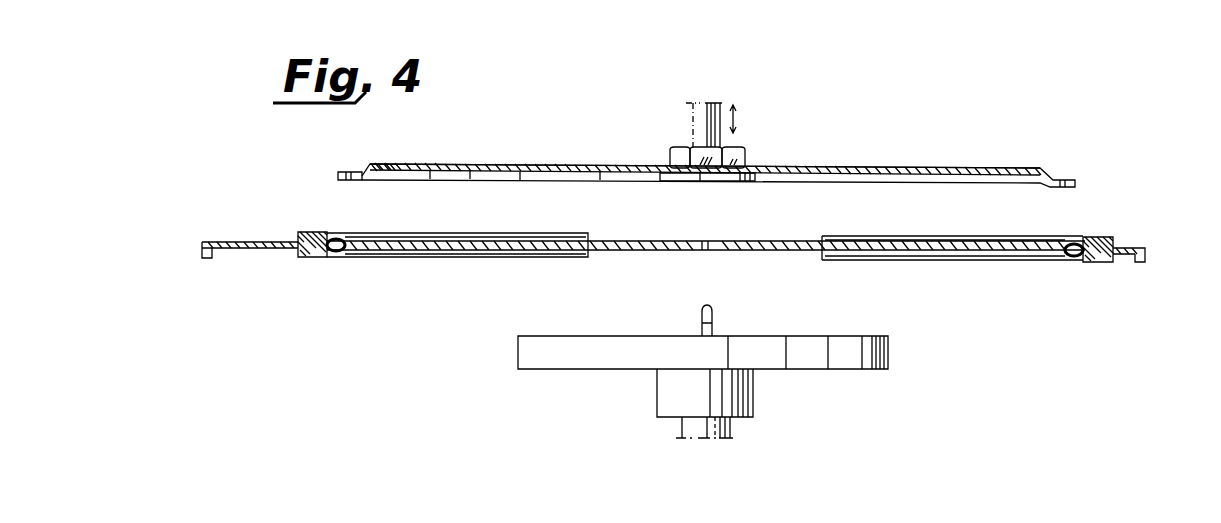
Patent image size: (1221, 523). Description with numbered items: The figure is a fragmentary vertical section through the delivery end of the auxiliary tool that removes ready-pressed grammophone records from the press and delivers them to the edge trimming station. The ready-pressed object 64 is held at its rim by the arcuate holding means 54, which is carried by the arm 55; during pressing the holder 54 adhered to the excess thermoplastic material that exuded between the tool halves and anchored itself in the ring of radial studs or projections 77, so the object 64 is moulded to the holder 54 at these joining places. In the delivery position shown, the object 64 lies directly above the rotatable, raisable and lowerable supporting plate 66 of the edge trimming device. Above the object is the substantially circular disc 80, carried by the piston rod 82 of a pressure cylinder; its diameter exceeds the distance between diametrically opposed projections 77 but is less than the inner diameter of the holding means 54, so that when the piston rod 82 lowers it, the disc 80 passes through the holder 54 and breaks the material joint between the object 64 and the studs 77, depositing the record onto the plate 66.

The holding means 54 is at (312, 232).
The arm 55 is at (258, 215).
The ready-pressed object 64 is at (753, 243).
The supporting plate 66 is at (841, 345).
The projections 77 is at (345, 240).
The disc 80 is at (948, 172).
The piston rod 82 is at (697, 127).